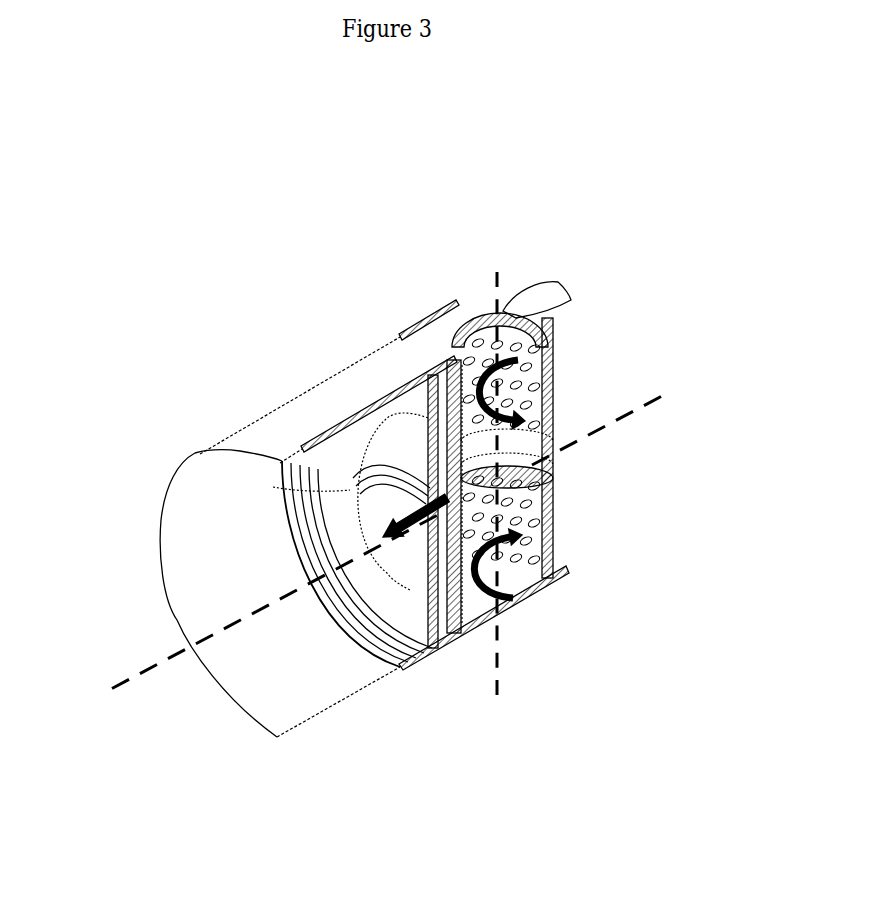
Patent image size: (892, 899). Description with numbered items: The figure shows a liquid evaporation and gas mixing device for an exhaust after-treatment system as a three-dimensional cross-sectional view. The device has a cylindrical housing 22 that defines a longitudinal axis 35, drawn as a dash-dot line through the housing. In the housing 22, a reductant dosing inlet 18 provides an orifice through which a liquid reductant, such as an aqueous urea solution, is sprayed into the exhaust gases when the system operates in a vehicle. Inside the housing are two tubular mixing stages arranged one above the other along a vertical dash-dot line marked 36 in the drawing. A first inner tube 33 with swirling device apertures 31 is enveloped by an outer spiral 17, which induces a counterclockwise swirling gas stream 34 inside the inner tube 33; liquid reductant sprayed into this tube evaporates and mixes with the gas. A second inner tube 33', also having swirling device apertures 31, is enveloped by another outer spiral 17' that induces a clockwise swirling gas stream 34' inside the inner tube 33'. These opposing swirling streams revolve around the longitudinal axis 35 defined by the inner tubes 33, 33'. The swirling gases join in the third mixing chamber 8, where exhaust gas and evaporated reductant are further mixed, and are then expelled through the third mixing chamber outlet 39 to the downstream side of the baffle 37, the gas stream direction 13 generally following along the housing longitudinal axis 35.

The third mixing chamber 8 is at (560, 453).
The gas stream direction 13 is at (345, 632).
The outer spiral 17 is at (594, 475).
The outer spiral 17' is at (595, 549).
The reductant dosing inlet 18 is at (543, 292).
The housing 22 is at (306, 427).
The swirling device apertures 31 is at (467, 313).
The inner tube 33 is at (582, 379).
The inner tube 33' is at (566, 534).
The counterclockwise swirling gas stream 34 is at (571, 340).
The clockwise swirling gas stream 34' is at (556, 574).
The longitudinal axis 35 is at (597, 432).
The rotation axis 36 is at (500, 642).
The baffle 37 is at (410, 663).
The third mixing chamber outlet 39 is at (273, 487).